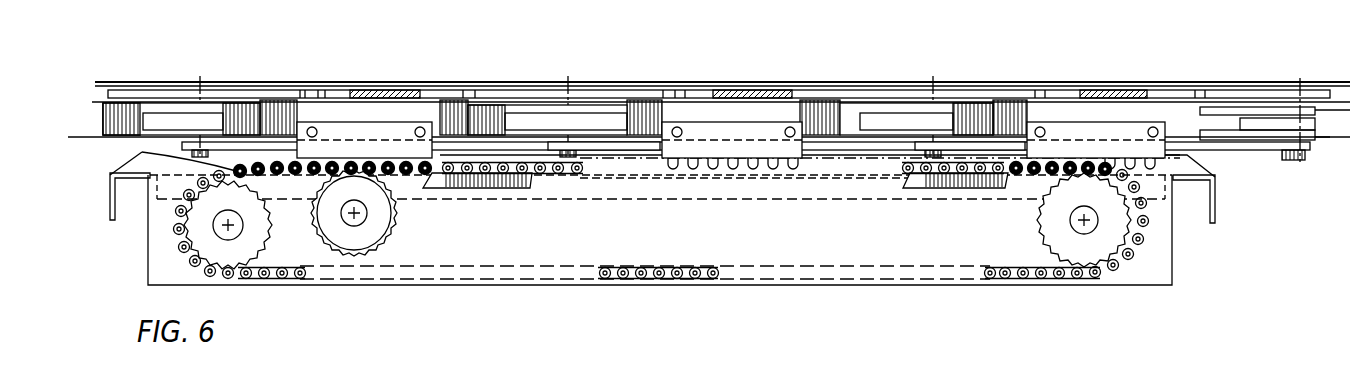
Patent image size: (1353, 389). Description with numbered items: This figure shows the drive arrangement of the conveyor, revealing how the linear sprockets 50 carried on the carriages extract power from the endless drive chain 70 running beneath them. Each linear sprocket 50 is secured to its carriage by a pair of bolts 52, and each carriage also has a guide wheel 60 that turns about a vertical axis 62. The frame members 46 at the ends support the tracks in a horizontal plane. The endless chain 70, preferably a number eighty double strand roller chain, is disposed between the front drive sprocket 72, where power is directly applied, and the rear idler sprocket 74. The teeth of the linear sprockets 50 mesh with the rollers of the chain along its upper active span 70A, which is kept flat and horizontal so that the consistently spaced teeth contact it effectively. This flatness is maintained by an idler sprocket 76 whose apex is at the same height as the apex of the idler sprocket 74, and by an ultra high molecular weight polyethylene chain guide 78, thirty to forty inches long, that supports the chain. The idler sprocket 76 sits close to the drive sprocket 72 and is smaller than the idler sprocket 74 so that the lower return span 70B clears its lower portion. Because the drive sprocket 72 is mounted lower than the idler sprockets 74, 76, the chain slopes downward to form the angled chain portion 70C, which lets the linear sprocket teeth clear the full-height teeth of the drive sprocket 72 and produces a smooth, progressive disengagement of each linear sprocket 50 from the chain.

The frame member 46 is at (110, 193).
The linear sprocket 50 is at (358, 122).
The bolt 52 is at (1154, 127).
The guide wheel 60 is at (533, 120).
The vertical axis 62 is at (600, 83).
The endless drive chain 70 is at (1041, 274).
The upper active span 70A is at (553, 172).
The lower return span 70B is at (698, 279).
The angled chain portion 70C is at (142, 152).
The drive sprocket 72 is at (223, 257).
The rear idler sprocket 74 is at (1047, 225).
The idler sprocket 76 is at (380, 222).
The chain guide 78 is at (457, 182).